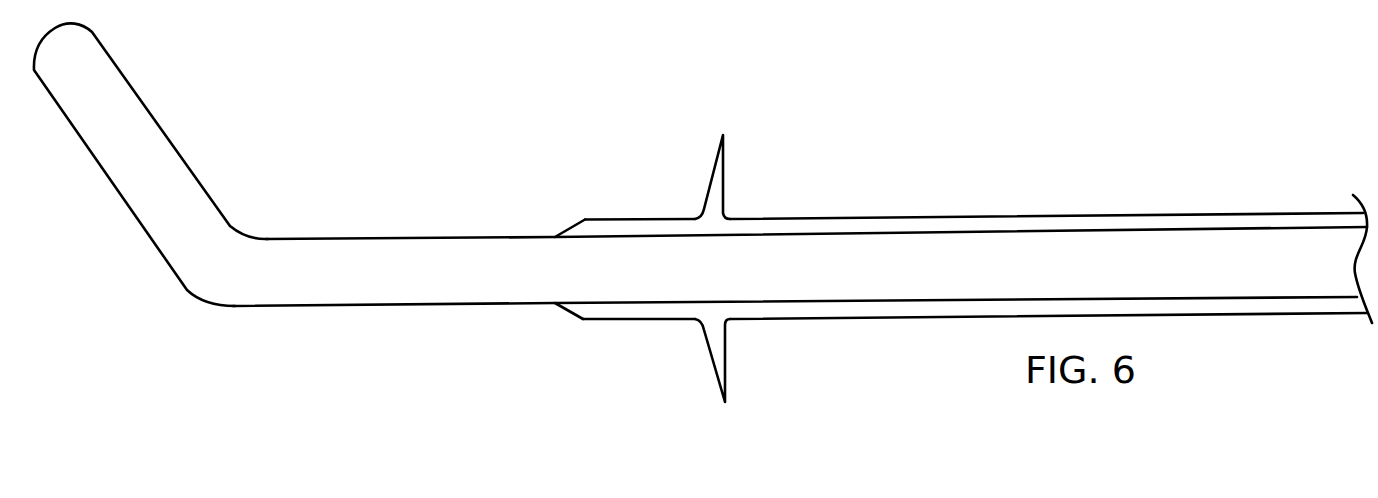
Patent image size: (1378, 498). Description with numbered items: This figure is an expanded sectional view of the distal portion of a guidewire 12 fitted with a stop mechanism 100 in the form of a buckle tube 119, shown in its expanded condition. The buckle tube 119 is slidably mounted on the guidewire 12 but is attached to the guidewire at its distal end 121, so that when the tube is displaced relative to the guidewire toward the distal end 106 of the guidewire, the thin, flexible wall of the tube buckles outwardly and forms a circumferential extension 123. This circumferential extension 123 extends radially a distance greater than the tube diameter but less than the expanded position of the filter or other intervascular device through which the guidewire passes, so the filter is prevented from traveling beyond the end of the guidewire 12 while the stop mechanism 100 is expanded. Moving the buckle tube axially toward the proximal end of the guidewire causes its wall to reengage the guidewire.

The stop mechanism 100 is at (703, 212).
The distal end 106 is at (159, 152).
The guidewire 12 is at (1077, 240).
The buckle tube 119 is at (943, 225).
The distal end 121 is at (557, 238).
The circumferential extension 123 is at (758, 192).